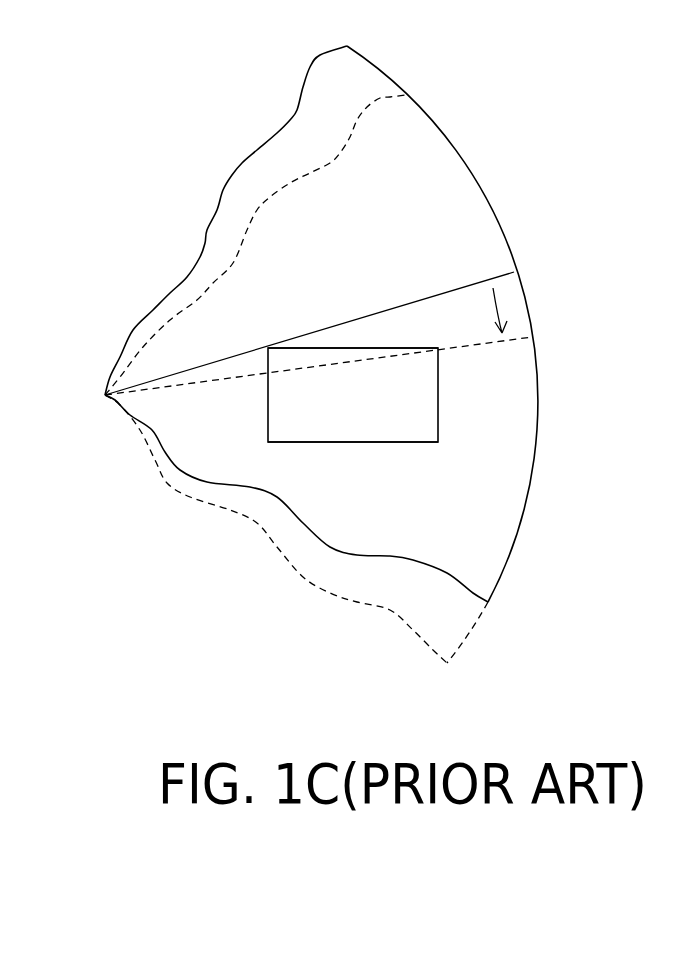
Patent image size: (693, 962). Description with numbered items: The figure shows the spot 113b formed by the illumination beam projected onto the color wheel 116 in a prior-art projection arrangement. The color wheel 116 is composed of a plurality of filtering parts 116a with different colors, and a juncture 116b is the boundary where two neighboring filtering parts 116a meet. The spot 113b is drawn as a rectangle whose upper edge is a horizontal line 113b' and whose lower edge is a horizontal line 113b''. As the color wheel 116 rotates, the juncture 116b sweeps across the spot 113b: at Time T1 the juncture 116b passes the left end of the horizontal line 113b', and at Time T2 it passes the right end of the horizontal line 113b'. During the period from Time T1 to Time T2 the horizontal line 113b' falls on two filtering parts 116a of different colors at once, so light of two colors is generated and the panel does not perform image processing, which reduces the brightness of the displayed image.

The color wheel 116 is at (382, 354).
The filtering parts 116a is at (450, 183).
The juncture 116b is at (475, 273).
The spot 113b is at (392, 427).
The horizontal line 113b' is at (366, 325).
The horizontal line 113b'' is at (368, 497).
The Time T1 is at (325, 320).
The Time T2 is at (334, 359).